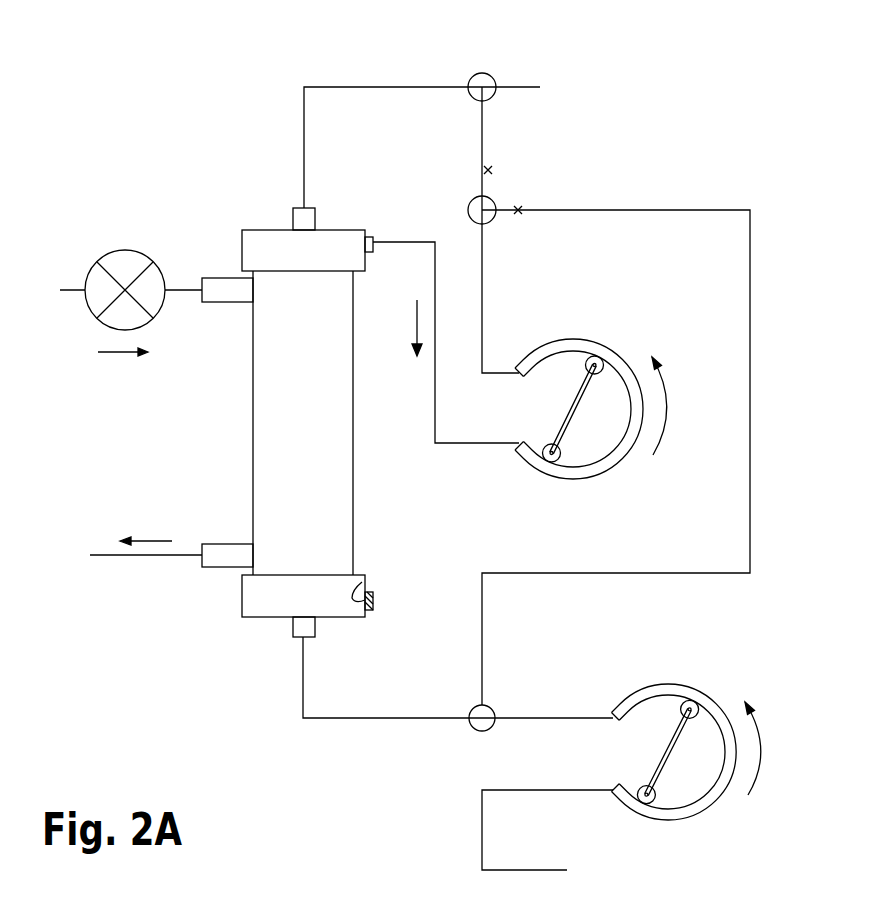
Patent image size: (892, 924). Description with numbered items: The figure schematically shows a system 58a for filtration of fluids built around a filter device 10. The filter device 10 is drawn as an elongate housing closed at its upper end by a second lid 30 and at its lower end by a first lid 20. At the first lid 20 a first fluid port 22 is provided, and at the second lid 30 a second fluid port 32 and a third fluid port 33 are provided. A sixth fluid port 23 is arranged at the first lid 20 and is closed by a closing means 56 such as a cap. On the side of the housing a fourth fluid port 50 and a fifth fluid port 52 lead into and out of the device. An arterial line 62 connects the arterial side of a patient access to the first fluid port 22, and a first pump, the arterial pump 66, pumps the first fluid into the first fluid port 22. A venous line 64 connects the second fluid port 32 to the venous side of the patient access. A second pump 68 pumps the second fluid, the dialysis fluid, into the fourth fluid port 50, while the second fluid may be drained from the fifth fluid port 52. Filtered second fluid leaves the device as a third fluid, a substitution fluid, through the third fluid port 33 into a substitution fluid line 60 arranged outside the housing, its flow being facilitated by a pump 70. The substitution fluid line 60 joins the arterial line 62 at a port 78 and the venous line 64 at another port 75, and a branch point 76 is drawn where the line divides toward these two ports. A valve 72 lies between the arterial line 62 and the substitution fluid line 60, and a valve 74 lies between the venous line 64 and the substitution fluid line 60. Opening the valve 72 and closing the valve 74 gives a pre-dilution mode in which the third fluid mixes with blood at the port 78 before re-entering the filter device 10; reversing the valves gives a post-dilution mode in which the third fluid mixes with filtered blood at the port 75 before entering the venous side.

The filter device 10 is at (266, 142).
The first lid 20 is at (237, 628).
The first fluid port 22 is at (293, 634).
The sixth fluid port 23 is at (362, 582).
The second lid 30 is at (238, 216).
The second fluid port 32 is at (317, 213).
The third fluid port 33 is at (373, 233).
The fourth fluid port 50 is at (222, 304).
The fifth fluid port 52 is at (222, 542).
The closing means 56 is at (375, 601).
The system 58a is at (740, 135).
The substitution fluid line 60 is at (433, 405).
The arterial line 62 is at (482, 826).
The venous line 64 is at (382, 86).
The arterial pump 66 is at (710, 806).
The second pump 68 is at (125, 265).
The pump 70 is at (622, 462).
The valve 72 is at (518, 218).
The valve 74 is at (482, 170).
The port 75 is at (482, 73).
The connector 76 is at (486, 198).
The port 78 is at (488, 706).